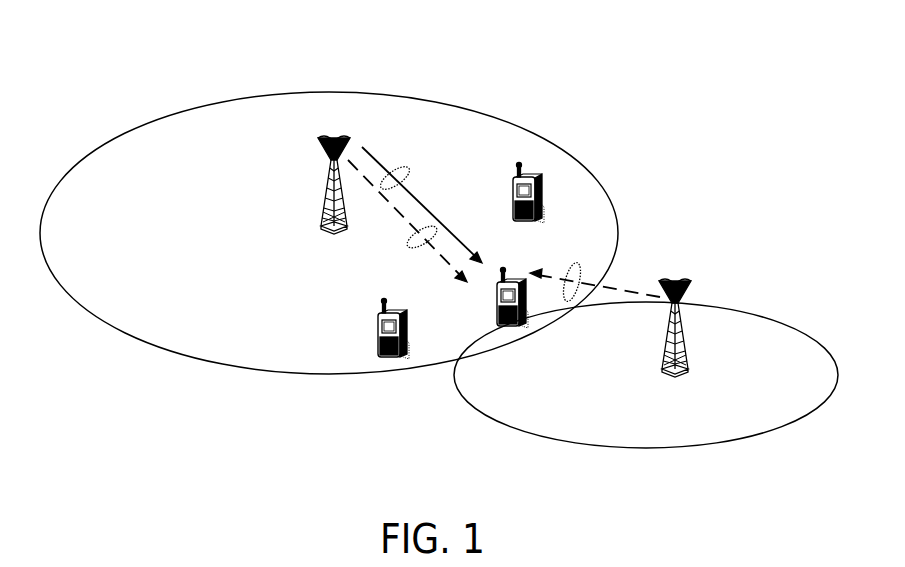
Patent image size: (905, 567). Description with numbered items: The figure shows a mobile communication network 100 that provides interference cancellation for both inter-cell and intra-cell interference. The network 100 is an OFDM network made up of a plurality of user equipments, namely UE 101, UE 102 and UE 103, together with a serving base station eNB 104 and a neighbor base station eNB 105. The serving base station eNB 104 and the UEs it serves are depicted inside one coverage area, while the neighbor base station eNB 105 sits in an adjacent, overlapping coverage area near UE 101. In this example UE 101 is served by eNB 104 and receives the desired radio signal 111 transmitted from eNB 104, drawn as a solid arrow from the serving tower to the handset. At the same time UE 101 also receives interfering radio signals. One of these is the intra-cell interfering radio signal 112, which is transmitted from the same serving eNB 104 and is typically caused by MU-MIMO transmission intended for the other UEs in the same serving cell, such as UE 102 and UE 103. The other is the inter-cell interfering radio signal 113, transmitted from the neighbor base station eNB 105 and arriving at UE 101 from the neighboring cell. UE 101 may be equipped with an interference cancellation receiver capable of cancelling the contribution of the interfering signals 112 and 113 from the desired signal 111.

The mobile communication network 100 is at (801, 52).
The user equipment 101 is at (485, 298).
The user equipment 102 is at (363, 329).
The user equipment 103 is at (526, 185).
The serving base station eNB 104 is at (335, 137).
The neighbor base station eNB 105 is at (678, 282).
The desired radio signal 111 is at (410, 171).
The intra-cell interfering radio signal 112 is at (408, 245).
The inter-cell interfering radio signal 113 is at (573, 267).